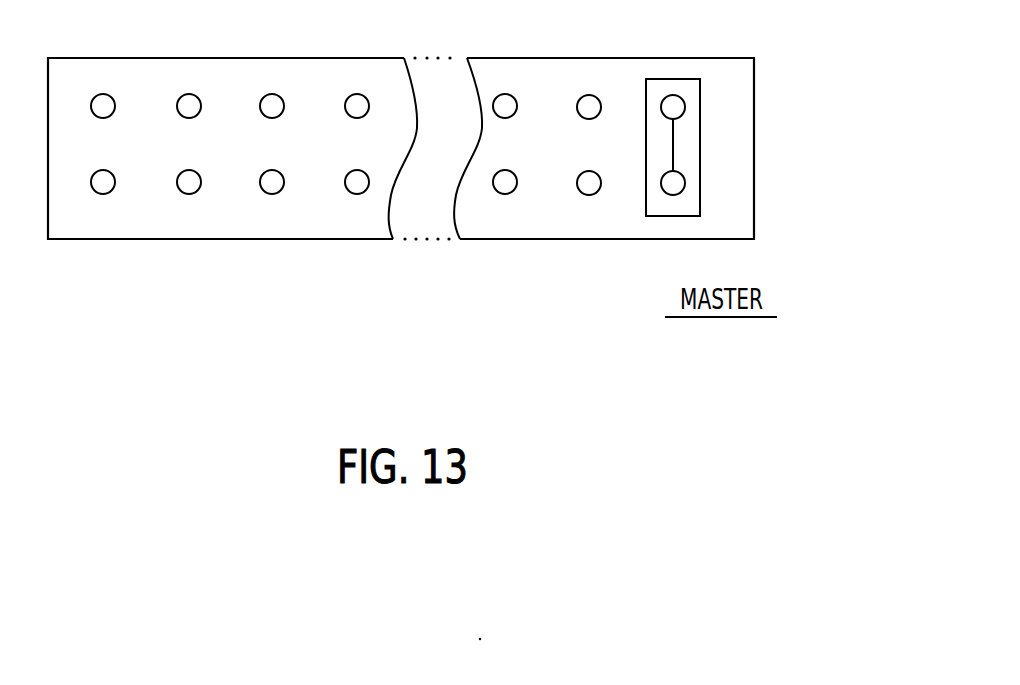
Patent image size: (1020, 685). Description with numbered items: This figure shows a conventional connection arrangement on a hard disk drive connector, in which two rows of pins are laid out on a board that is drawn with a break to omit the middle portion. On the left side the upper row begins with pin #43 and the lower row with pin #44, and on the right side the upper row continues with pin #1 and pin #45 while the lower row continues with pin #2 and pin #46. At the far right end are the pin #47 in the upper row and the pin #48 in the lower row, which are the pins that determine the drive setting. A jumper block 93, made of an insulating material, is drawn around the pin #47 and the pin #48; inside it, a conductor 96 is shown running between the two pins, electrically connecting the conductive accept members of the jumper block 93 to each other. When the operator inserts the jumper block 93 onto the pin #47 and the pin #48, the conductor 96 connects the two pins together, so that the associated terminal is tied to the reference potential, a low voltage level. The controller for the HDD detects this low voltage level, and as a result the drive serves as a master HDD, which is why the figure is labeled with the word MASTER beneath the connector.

The jumper block 93 is at (675, 79).
The conductor 96 is at (673, 145).
The connector pin # 43 is at (103, 128).
The connector pin # 44 is at (103, 204).
The connector pin # 1 is at (503, 128).
The connector pin # 2 is at (503, 204).
The connector pin # 45 is at (589, 129).
The connector pin # 46 is at (589, 204).
The pin # 47 is at (704, 107).
The pin # 48 is at (704, 183).